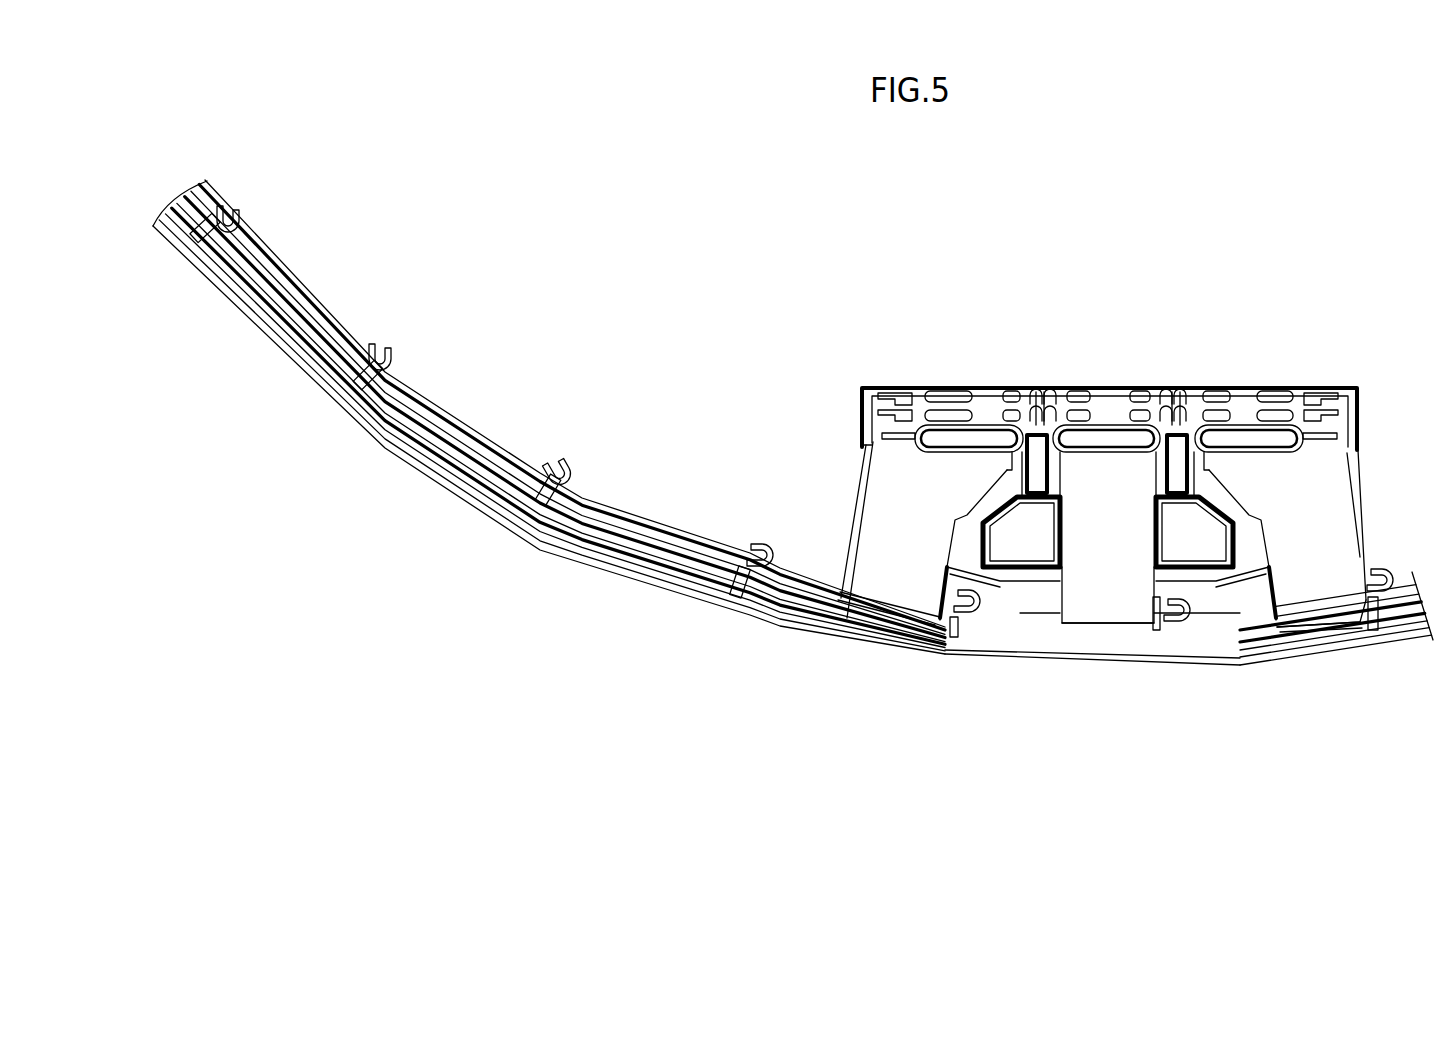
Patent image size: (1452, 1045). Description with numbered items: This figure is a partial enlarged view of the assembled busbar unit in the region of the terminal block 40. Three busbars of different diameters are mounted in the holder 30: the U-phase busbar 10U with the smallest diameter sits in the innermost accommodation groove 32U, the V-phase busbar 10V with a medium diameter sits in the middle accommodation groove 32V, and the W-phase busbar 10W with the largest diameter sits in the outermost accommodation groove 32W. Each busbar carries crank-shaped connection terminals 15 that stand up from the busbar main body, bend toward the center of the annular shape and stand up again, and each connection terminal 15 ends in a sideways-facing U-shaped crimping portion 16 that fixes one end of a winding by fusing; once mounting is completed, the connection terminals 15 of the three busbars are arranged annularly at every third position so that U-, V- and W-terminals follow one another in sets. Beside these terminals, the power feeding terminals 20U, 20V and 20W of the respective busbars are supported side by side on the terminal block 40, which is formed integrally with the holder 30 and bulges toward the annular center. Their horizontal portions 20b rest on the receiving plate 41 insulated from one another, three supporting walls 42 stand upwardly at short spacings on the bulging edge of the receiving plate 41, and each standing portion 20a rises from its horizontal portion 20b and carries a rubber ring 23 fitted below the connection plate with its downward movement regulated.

The connection terminal 15 is at (195, 245).
The crimping portion 16 is at (241, 216).
The holder 30 is at (678, 597).
The U-phase busbar 10U is at (517, 468).
The V-phase busbar 10V is at (572, 515).
The W-phase busbar 10W is at (620, 552).
The innermost accommodation groove 32U is at (376, 418).
The middle accommodation groove 32V is at (418, 428).
The outermost accommodation groove 32W is at (437, 460).
The terminal block 40 is at (1363, 455).
The receiving plate 41 is at (1360, 470).
The supporting wall 42 is at (905, 398).
The rubber ring 23 is at (946, 414).
The standing portion 20a is at (990, 432).
The U-phase power feeding terminal 20U is at (1110, 470).
The V-phase power feeding terminal 20V is at (890, 489).
The W-phase power feeding terminal 20W is at (1318, 505).
The horizontal portion 20b is at (883, 552).